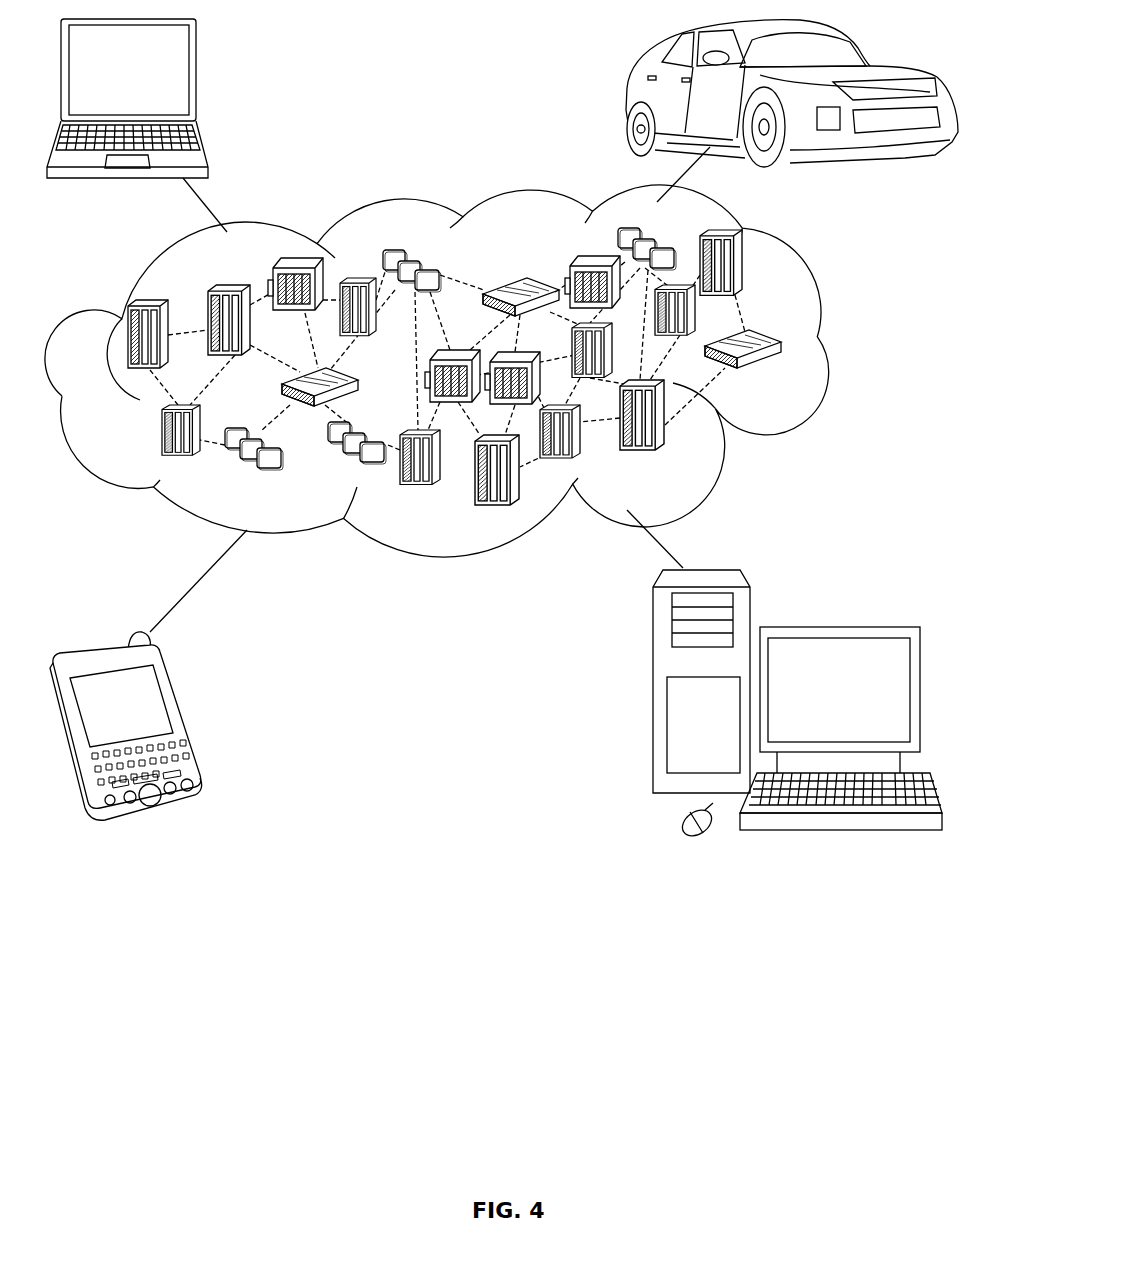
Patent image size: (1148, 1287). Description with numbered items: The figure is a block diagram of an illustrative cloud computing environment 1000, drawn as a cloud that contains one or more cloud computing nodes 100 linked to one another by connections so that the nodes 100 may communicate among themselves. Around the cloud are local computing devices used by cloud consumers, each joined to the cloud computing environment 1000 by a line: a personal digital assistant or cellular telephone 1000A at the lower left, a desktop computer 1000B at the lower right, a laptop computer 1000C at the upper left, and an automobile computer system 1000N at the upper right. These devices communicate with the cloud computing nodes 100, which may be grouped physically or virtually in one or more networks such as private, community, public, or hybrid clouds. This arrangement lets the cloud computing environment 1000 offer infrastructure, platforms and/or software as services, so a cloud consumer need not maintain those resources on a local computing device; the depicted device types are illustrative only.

The cloud computing environment 1000 is at (840, 342).
The cloud computing nodes 100 is at (782, 372).
The personal digital assistant (PDA) or cellular telephone 1000A is at (190, 718).
The desktop computer 1000B is at (838, 625).
The laptop computer 1000C is at (196, 80).
The automobile computer system 1000N is at (622, 103).